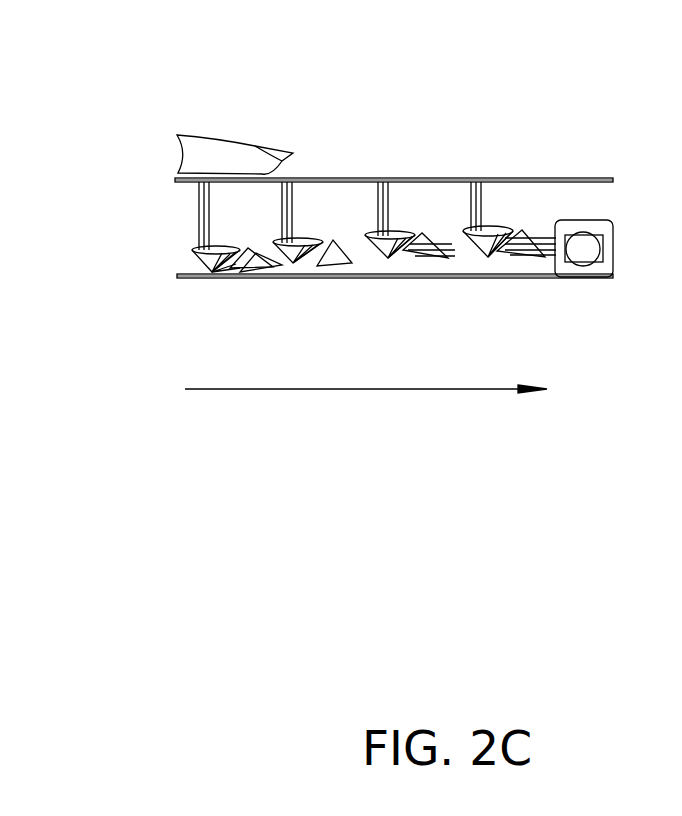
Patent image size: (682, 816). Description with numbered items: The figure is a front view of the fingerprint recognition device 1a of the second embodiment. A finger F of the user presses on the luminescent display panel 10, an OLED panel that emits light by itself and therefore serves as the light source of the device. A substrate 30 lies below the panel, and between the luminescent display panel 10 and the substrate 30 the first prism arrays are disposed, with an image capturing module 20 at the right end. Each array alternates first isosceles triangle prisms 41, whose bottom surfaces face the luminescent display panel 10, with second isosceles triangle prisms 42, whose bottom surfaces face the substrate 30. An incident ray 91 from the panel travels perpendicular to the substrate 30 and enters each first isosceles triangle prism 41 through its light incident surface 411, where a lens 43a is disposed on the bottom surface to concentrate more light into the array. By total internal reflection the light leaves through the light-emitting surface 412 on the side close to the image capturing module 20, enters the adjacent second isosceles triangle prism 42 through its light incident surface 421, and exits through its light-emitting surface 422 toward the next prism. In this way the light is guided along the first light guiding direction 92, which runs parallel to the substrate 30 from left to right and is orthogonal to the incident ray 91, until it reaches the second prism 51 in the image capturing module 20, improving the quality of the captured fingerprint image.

The fingerprint recognition device 1a is at (163, 66).
The finger F is at (197, 138).
The luminescent display panel 10 is at (594, 178).
The image capturing module 20 is at (613, 230).
The substrate 30 is at (178, 276).
The first isosceles triangle prism 41 is at (198, 266).
The light incident surface 411 is at (388, 256).
The light-emitting surface 412 is at (225, 266).
The second isosceles triangle prism 42 is at (268, 268).
The light incident surface 421 is at (255, 265).
The light-emitting surface 422 is at (280, 270).
The lens 43a is at (212, 250).
The second prism 51 is at (590, 250).
The incident ray 91 is at (200, 213).
The first light guiding direction 92 is at (448, 388).